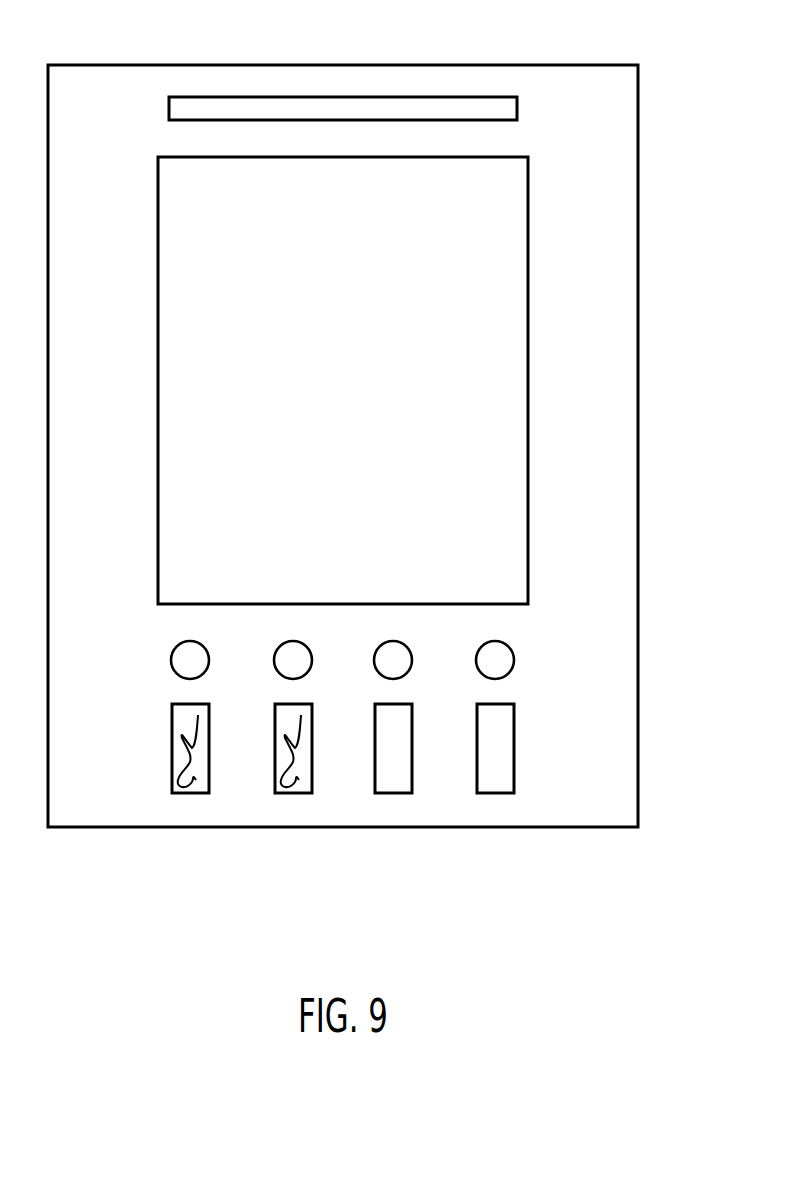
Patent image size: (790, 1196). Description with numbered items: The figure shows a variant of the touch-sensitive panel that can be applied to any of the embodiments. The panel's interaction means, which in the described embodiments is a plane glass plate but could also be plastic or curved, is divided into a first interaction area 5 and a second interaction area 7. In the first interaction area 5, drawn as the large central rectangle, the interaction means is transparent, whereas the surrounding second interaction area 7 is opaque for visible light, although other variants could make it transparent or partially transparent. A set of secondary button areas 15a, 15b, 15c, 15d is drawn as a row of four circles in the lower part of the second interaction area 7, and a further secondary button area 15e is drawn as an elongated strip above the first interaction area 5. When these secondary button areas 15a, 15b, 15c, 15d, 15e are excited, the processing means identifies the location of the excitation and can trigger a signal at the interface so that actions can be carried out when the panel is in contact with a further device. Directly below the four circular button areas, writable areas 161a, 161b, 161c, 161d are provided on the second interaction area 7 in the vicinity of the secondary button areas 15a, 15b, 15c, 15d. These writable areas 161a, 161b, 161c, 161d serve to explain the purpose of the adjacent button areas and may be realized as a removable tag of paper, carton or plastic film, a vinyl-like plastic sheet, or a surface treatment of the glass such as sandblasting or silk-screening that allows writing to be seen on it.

The first interaction area 5 is at (480, 282).
The second interaction area 7 is at (598, 387).
The secondary button area 15a is at (173, 666).
The secondary button area 15b is at (276, 666).
The secondary button area 15c is at (376, 666).
The secondary button area 15d is at (478, 666).
The secondary button area 15e is at (210, 98).
The writable area 161a is at (191, 793).
The writable area 161b is at (294, 793).
The writable area 161c is at (394, 793).
The writable area 161d is at (496, 793).